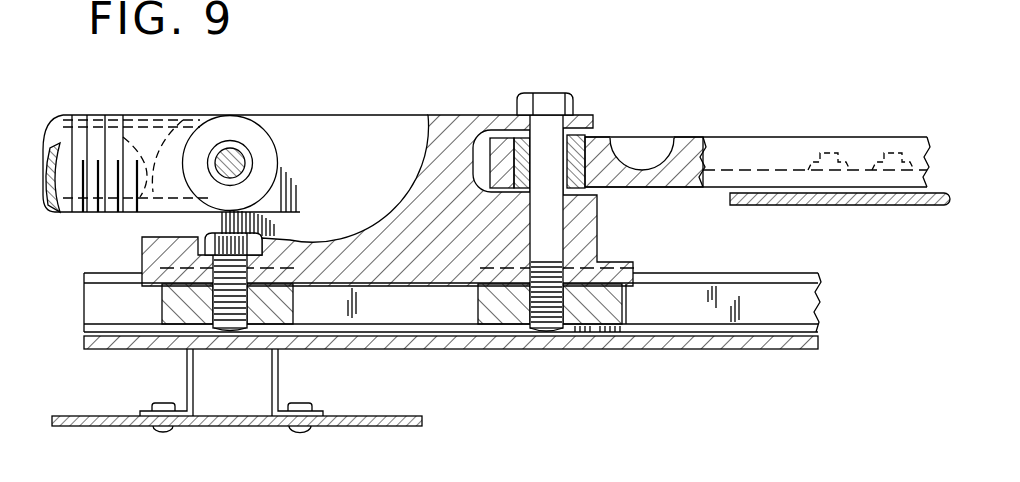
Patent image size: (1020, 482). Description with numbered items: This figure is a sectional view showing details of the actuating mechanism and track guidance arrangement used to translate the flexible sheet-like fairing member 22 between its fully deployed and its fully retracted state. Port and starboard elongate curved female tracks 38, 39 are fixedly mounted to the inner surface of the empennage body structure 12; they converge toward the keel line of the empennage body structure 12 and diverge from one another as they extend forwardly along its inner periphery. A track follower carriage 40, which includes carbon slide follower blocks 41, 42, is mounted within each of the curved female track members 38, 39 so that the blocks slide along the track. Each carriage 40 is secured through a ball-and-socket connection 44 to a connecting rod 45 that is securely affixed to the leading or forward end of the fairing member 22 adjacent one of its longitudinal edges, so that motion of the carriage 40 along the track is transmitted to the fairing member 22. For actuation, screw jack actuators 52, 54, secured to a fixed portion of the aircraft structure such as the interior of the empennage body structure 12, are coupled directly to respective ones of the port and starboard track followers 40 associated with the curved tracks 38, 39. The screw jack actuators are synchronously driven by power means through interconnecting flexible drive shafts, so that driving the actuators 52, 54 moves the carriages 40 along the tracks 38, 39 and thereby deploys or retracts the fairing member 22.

The empennage body structure 12 is at (393, 413).
The fairing member 22 is at (905, 207).
The port curved female track 38 is at (452, 302).
The starboard curved female track 39 is at (753, 295).
The track follower carriage 40 is at (465, 127).
The carbon slide follower block 41 is at (283, 312).
The carbon slide follower block 42 is at (596, 317).
The ball-and-socket connection 44 is at (578, 155).
The connecting rod 45 is at (663, 177).
The screw jack actuator 52 is at (104, 163).
The screw jack actuator 54 is at (163, 128).